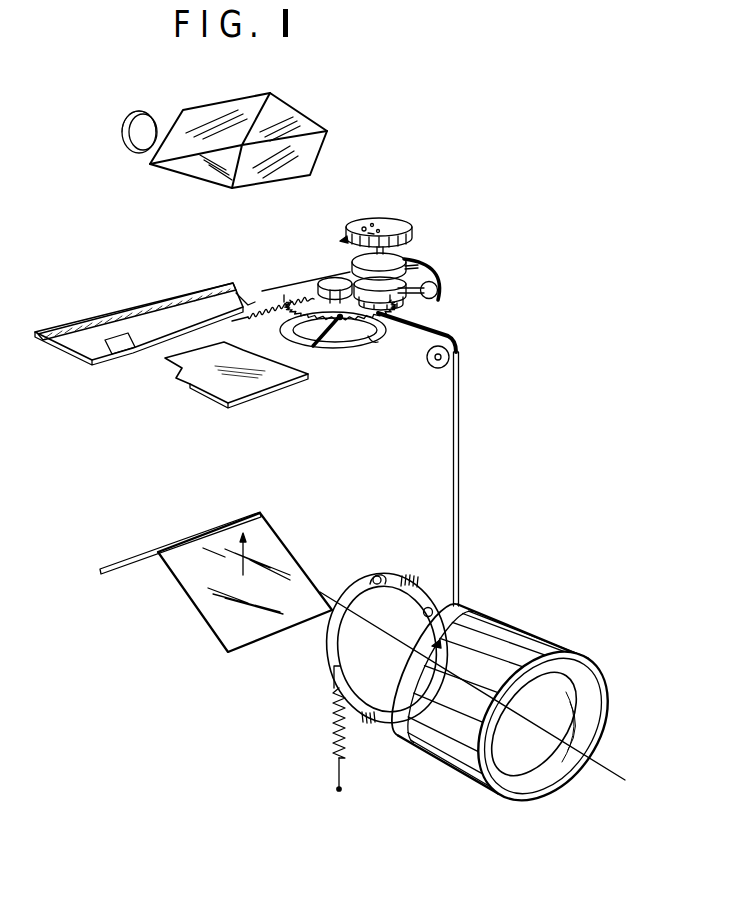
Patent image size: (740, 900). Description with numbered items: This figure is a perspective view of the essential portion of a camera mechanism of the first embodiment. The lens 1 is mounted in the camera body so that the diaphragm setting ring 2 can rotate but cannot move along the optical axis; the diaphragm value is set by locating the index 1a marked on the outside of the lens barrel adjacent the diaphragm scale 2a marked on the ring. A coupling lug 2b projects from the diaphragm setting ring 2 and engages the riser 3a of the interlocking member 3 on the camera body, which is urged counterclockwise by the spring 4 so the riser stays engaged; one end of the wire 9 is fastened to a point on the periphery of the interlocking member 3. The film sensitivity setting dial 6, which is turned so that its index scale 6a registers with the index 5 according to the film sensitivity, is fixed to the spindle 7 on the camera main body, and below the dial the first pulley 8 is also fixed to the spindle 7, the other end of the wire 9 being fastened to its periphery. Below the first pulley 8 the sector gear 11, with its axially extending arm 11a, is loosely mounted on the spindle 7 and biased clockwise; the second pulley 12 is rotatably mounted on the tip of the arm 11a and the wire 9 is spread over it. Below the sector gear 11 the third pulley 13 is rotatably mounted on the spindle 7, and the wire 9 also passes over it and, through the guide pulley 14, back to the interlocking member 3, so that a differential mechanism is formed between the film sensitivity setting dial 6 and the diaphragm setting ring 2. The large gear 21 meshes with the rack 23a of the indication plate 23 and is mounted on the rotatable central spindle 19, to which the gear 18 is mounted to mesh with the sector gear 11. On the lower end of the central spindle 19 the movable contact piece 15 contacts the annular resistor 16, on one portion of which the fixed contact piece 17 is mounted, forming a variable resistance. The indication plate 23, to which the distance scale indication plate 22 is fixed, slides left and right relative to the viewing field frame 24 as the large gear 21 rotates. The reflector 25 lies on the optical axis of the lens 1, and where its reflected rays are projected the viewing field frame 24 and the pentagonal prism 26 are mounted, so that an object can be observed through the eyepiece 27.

The lens 1 is at (520, 636).
The index 1a is at (443, 644).
The diaphragm setting ring 2 is at (466, 607).
The diaphragm scale 2a is at (395, 683).
The coupling lug 2b is at (423, 611).
The interlocking member 3 is at (358, 596).
The riser 3a is at (383, 574).
The spring 4 is at (333, 743).
The index 5 is at (343, 238).
The film sensitivity setting dial 6 is at (394, 221).
The index scale 6a is at (365, 222).
The spindle 7 is at (399, 261).
The first pulley 8 is at (413, 268).
The wire 9 is at (440, 277).
The sector gear 11 is at (362, 282).
The arm 11a is at (420, 306).
The second pulley 12 is at (438, 291).
The third pulley 13 is at (393, 324).
The guide pulley 14 is at (436, 369).
The movable contact piece 15 is at (317, 349).
The annular resistor 16 is at (354, 351).
The fixed contact piece 17 is at (373, 342).
The gear 18 is at (312, 293).
The central spindle 19 is at (316, 292).
The large gear 21 is at (292, 318).
The distance scale indication plate 22 is at (133, 336).
The indication plate 23 is at (230, 283).
The rack 23a is at (270, 298).
The viewing field frame 24 is at (190, 380).
The reflector 25 is at (218, 623).
The pentagonal prism 26 is at (293, 118).
The eyepiece 27 is at (121, 135).